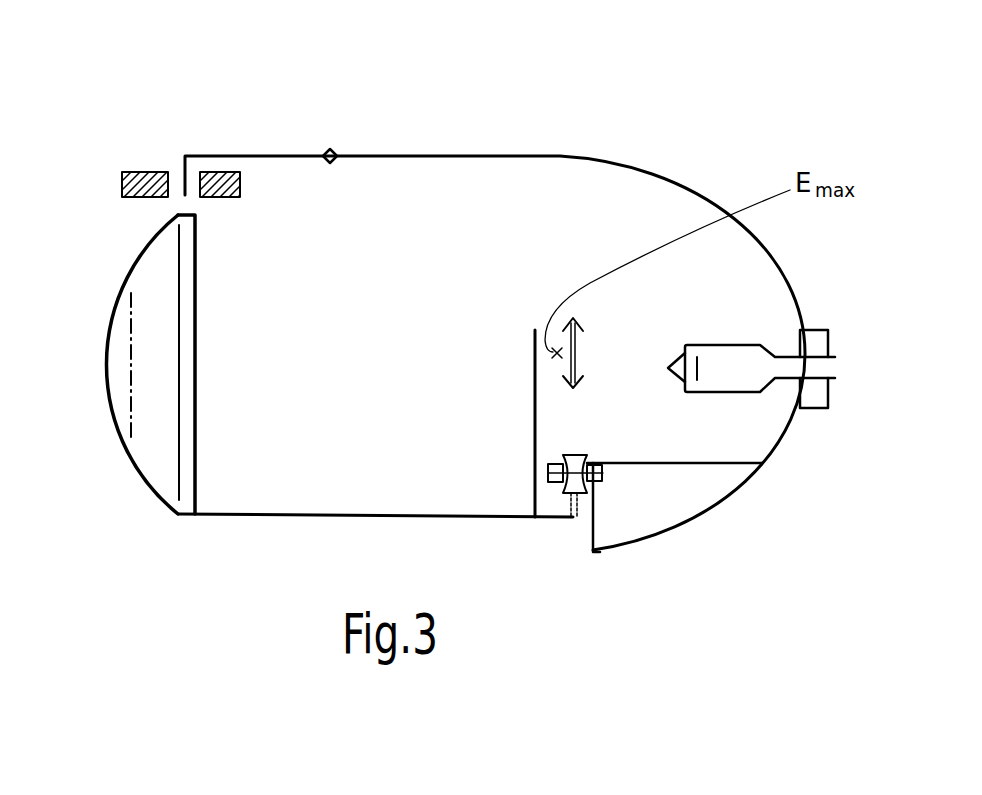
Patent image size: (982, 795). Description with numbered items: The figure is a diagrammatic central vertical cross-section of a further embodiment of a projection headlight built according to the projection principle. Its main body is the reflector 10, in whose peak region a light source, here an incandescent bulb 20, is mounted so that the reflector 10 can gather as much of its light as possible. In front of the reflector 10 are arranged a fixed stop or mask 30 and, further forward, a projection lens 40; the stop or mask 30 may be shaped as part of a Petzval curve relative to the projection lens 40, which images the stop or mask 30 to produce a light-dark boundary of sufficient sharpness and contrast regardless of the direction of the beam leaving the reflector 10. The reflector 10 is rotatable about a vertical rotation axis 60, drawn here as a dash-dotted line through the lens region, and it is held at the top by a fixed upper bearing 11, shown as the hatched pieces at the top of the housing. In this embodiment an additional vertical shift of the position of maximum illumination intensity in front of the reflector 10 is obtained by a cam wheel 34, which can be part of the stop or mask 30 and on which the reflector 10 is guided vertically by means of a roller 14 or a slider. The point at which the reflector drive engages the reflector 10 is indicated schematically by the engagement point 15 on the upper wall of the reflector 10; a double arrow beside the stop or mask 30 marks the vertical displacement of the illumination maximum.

The reflector 10 is at (678, 185).
The fixed upper bearing 11 is at (151, 168).
The roller 14 is at (570, 458).
The engagement point of reflector drive 15 is at (330, 149).
The incandescent bulb 20 is at (752, 362).
The stop or mask 30 is at (535, 415).
The cam wheel 34 is at (575, 502).
The projection lens 40 is at (157, 287).
The vertical rotation axis 60 is at (130, 373).